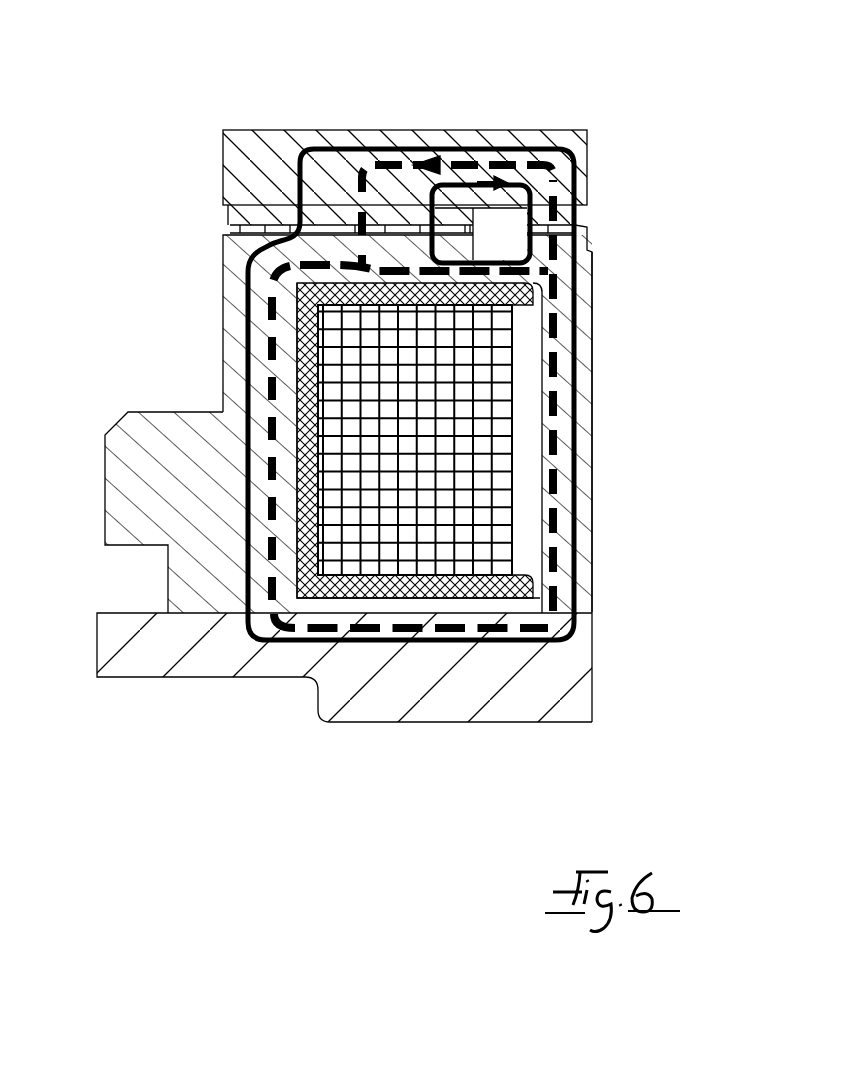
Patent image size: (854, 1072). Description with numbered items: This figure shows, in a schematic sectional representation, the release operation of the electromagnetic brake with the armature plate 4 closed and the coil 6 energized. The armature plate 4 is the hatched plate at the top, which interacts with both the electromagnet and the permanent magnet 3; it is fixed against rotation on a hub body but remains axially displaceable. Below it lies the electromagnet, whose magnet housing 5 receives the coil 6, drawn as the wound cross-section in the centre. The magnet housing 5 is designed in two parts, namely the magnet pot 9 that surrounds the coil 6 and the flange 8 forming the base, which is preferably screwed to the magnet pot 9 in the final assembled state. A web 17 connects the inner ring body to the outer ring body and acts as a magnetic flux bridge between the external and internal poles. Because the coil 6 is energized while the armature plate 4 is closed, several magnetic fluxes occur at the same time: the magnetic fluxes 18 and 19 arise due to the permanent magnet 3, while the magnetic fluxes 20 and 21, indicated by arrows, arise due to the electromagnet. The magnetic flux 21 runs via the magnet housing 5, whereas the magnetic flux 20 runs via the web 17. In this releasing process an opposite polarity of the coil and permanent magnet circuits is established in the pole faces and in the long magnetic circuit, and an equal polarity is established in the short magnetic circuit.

The permanent magnet 3 is at (328, 232).
The armature plate 4 is at (247, 140).
The magnet housing 5 is at (195, 580).
The coil 6 is at (373, 525).
The flange 8 is at (393, 683).
The magnet pot 9 is at (582, 447).
The web 17 is at (580, 306).
The magnetic flux 18 is at (548, 226).
The magnetic flux 19 is at (585, 160).
The magnetic flux 20 is at (513, 303).
The magnetic flux 21 is at (583, 547).